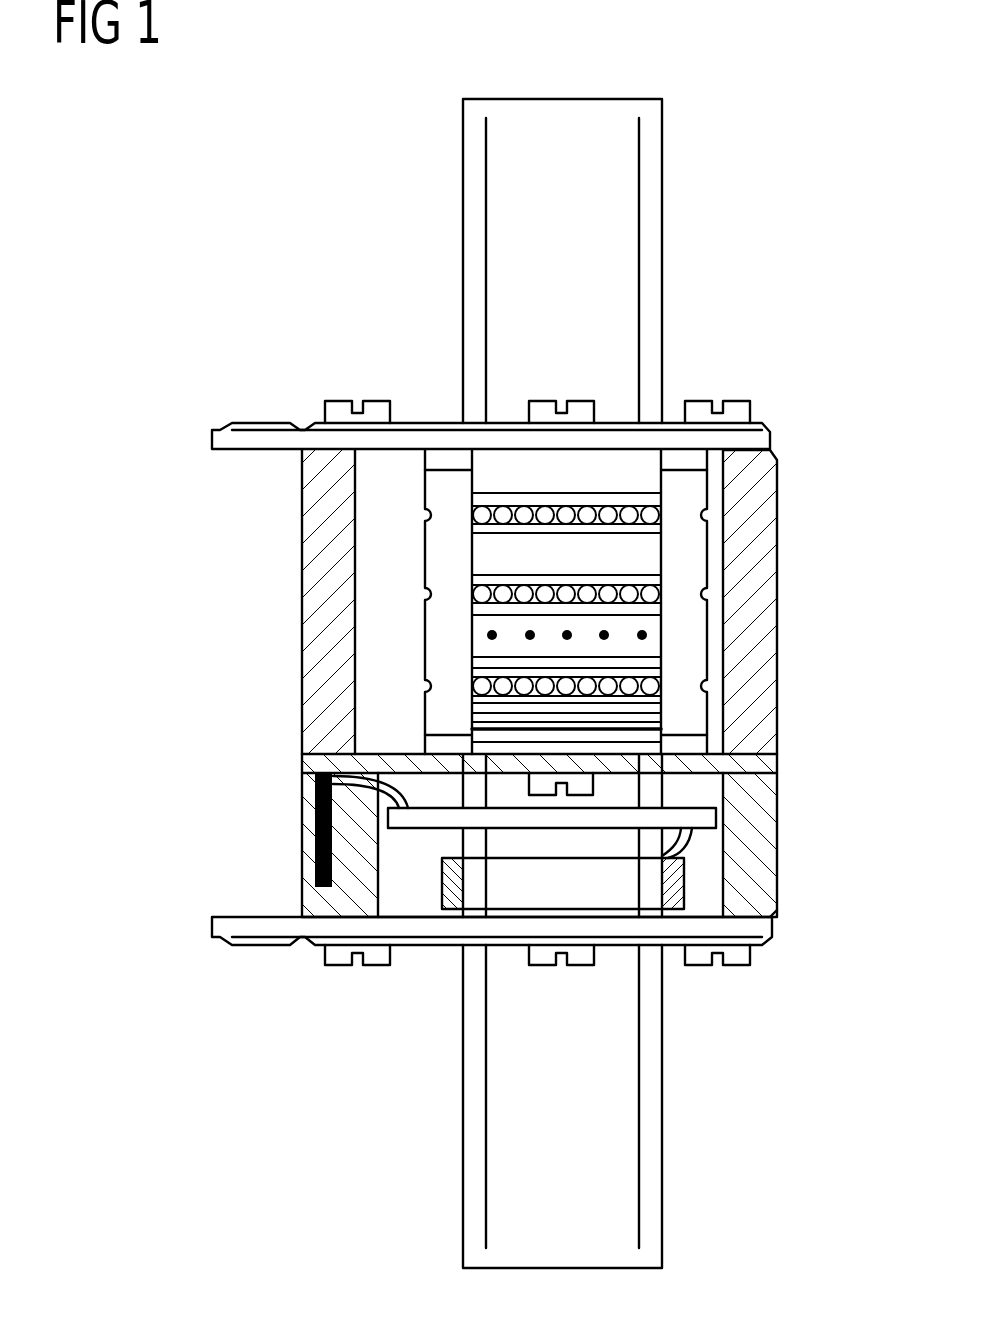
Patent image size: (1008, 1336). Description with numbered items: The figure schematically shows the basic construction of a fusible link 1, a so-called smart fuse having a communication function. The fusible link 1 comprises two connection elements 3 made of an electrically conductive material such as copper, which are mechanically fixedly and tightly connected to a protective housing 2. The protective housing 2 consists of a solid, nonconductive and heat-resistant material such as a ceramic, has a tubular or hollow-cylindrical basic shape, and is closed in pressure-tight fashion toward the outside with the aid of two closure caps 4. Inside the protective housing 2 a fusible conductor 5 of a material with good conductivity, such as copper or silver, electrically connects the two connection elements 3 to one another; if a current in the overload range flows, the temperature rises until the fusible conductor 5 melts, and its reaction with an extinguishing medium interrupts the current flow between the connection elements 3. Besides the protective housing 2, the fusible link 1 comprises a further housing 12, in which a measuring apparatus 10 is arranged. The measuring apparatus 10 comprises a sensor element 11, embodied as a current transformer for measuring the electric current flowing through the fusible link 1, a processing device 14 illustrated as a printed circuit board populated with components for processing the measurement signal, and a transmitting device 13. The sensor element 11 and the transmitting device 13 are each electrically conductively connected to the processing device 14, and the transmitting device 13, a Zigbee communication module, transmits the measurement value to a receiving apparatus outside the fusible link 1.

The fusible link 1 is at (790, 150).
The protective housing 2 is at (753, 670).
The connection elements 3 is at (609, 219).
The closure caps 4 is at (752, 440).
The fusible conductor 5 is at (637, 553).
The measuring apparatus 10 is at (200, 780).
The sensor element 11 is at (442, 898).
The further housing 12 is at (753, 847).
The transmitting device 13 is at (335, 804).
The processing device 14 is at (437, 813).